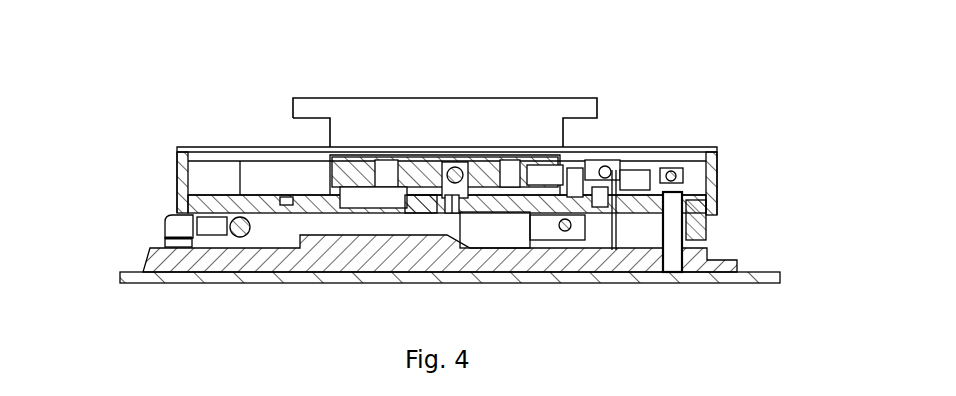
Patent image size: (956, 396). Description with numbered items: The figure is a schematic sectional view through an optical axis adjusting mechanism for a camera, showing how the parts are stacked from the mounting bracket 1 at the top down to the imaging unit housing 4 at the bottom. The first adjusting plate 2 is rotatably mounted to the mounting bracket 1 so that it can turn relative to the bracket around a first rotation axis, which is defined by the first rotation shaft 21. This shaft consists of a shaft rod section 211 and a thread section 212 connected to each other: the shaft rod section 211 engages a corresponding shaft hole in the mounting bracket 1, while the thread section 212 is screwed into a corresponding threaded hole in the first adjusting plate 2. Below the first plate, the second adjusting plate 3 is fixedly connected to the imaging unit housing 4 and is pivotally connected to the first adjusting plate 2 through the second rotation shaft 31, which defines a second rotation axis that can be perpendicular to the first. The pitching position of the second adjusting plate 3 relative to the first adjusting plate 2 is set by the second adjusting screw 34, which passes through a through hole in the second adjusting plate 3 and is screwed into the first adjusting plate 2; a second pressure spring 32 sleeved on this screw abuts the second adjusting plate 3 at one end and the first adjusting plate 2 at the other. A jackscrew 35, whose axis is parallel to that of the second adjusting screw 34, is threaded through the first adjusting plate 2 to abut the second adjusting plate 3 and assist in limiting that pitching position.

The mounting bracket 1 is at (185, 150).
The first adjusting plate 2 is at (303, 168).
The first rotation shaft 21 is at (440, 163).
The shaft rod section 211 is at (458, 170).
The thread section 212 is at (448, 200).
The second adjusting plate 3 is at (158, 255).
The second rotation shaft 31 is at (197, 217).
The second pressure spring 32 is at (720, 222).
The second adjusting screw 34 is at (717, 152).
The jackscrew 35 is at (615, 160).
The imaging unit housing 4 is at (125, 275).